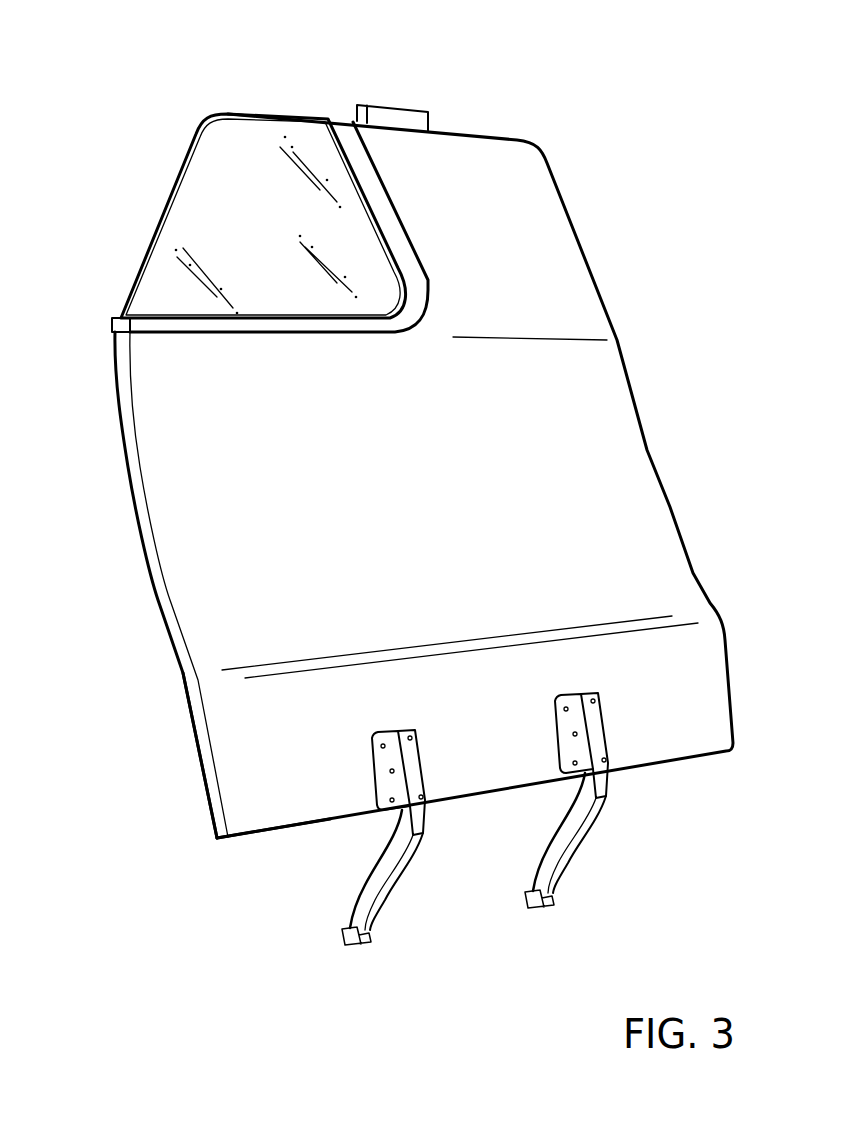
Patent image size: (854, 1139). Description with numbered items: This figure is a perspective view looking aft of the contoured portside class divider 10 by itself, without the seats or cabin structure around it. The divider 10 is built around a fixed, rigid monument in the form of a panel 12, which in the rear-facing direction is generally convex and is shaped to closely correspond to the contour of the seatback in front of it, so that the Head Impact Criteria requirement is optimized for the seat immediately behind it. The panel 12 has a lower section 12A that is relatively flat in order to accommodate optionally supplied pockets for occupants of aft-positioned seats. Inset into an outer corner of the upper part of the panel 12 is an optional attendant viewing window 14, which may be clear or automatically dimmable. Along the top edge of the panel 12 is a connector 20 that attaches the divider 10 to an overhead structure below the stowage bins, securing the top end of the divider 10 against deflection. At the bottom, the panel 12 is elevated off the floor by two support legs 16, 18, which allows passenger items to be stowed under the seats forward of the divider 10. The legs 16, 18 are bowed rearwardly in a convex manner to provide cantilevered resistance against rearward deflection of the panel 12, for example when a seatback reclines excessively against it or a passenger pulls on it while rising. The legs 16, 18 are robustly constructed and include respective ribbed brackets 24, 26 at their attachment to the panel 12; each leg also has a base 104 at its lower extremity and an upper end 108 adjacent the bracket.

The contoured portside class divider 10 is at (691, 228).
The panel 12 is at (183, 470).
The lower section 12A is at (200, 830).
The attendant viewing window 14 is at (217, 172).
The support leg 16 is at (357, 905).
The support leg 18 is at (540, 863).
The connector 20 is at (392, 112).
The ribbed bracket 24 is at (390, 784).
The ribbed bracket 26 is at (600, 737).
The base 104 is at (370, 932).
The upper end 108 is at (410, 788).